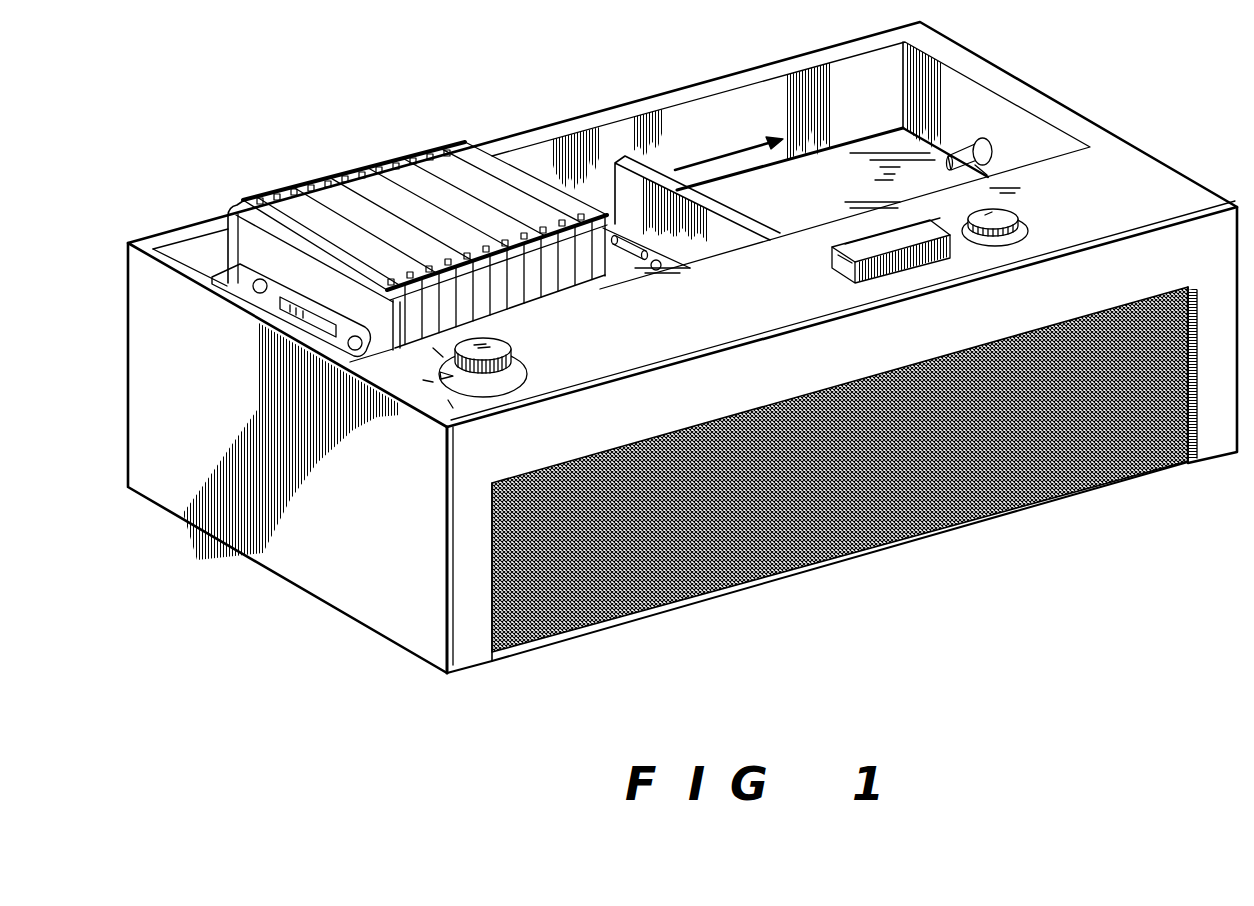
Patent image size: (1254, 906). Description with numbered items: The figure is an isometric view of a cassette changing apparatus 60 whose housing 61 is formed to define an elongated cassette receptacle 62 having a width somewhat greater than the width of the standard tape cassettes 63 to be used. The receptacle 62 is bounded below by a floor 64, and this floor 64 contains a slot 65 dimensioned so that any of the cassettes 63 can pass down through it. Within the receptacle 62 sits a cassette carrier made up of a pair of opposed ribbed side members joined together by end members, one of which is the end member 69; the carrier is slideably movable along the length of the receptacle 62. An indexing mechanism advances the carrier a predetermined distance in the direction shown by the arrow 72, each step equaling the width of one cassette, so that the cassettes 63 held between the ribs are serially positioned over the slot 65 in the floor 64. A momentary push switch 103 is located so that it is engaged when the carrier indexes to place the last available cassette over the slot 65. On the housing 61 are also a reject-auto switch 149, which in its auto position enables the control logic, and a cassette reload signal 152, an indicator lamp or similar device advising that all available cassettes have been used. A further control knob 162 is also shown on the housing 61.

The cassette changing apparatus 60 is at (297, 595).
The housing 61 is at (158, 243).
The cassette receptacle 62 is at (1040, 153).
The cassettes 63 is at (317, 180).
The floor 64 is at (846, 193).
The slot 65 is at (607, 216).
The end member 69 is at (752, 192).
The arrow 72 is at (748, 146).
The last-cassette push switch 103 is at (965, 145).
The reject-auto switch 149 is at (830, 252).
The cassette reload signal 152 is at (1027, 240).
The control knob 162 is at (527, 370).